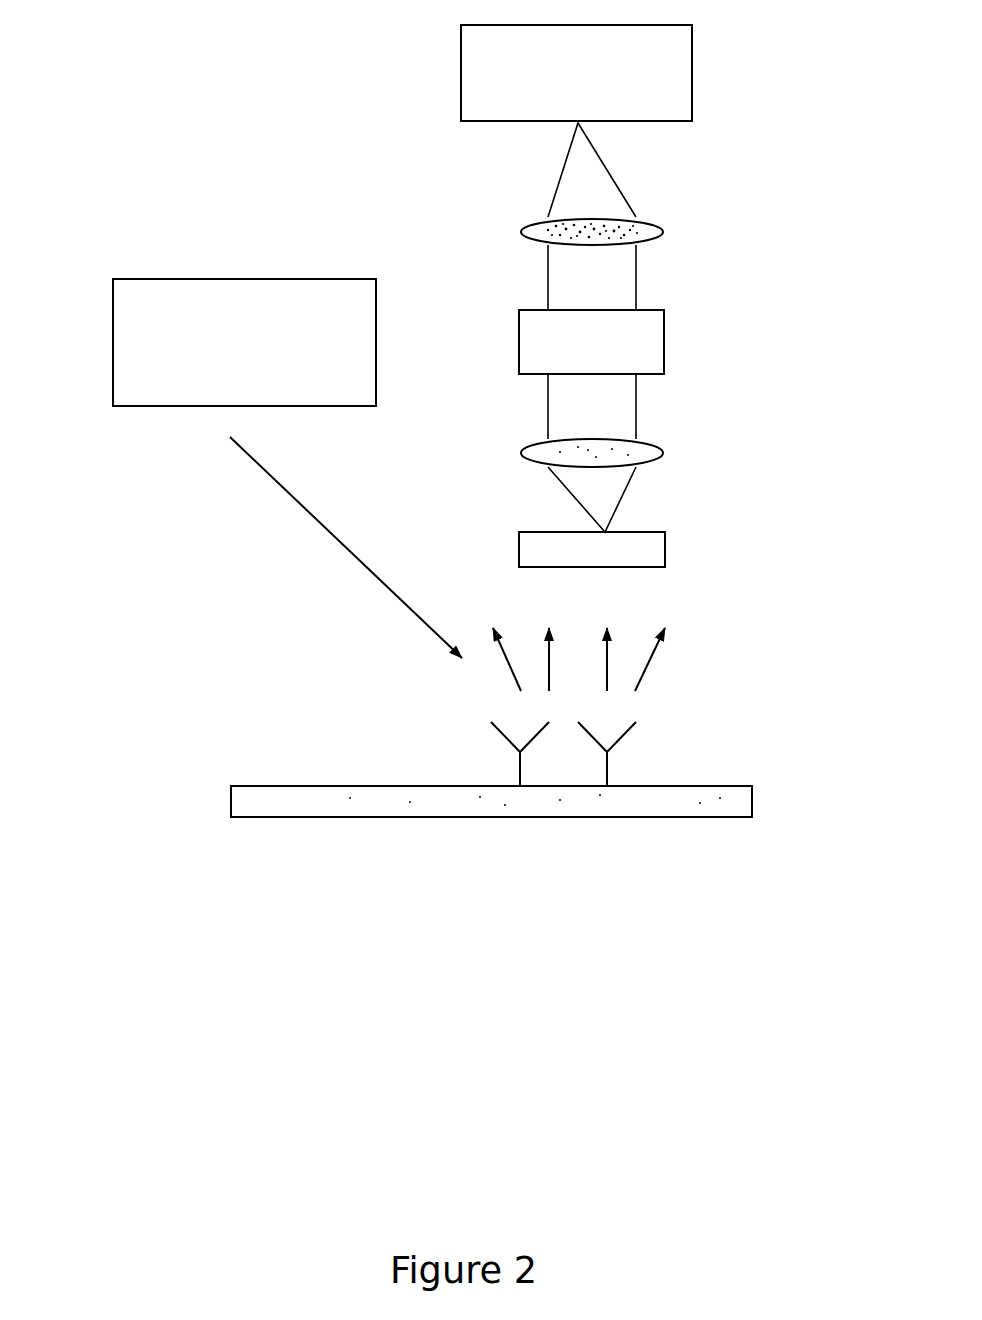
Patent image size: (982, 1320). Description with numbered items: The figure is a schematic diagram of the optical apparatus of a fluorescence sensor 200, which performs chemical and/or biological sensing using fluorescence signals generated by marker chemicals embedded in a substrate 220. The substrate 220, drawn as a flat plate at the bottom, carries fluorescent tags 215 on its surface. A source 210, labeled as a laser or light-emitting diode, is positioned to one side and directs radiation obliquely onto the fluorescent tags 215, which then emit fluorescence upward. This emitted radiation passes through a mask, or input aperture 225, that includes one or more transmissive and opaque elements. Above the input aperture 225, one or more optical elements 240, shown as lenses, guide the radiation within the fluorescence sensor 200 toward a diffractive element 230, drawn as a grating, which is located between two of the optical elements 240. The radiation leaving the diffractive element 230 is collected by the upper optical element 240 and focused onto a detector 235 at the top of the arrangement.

The fluorescence sensor 200 is at (222, 123).
The source 210 is at (113, 339).
The fluorescent tags 215 is at (520, 768).
The substrate 220 is at (752, 808).
The mask (input aperture) 225 is at (519, 551).
The diffractive element 230 is at (664, 349).
The detector 235 is at (692, 85).
The optical elements 240 is at (663, 237).